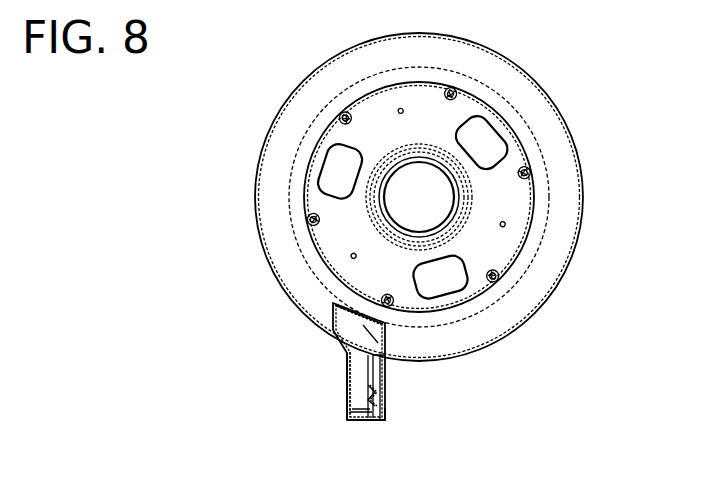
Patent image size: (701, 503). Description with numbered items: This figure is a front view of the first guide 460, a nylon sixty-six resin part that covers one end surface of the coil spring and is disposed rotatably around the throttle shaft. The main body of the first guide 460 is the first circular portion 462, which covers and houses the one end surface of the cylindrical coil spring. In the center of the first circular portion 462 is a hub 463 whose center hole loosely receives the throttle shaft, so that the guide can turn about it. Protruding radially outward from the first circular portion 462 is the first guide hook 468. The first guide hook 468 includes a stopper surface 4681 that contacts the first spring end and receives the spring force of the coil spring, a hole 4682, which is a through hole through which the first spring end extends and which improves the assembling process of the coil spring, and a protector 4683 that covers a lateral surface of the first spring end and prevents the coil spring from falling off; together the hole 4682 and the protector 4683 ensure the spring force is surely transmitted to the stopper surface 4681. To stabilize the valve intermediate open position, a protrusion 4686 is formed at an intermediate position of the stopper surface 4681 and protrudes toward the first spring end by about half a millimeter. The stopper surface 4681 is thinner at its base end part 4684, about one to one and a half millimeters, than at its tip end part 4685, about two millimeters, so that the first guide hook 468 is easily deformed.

The first guide 460 is at (538, 325).
The first circular portion 462 is at (532, 99).
The hub 463 is at (464, 197).
The first guide hook 468 is at (366, 421).
The stopper surface 4681 is at (352, 398).
The hole 4682 is at (390, 360).
The protector 4683 is at (358, 367).
The base end part 4684 is at (342, 348).
The tip end part 4685 is at (390, 415).
The protrusion 4686 is at (365, 394).